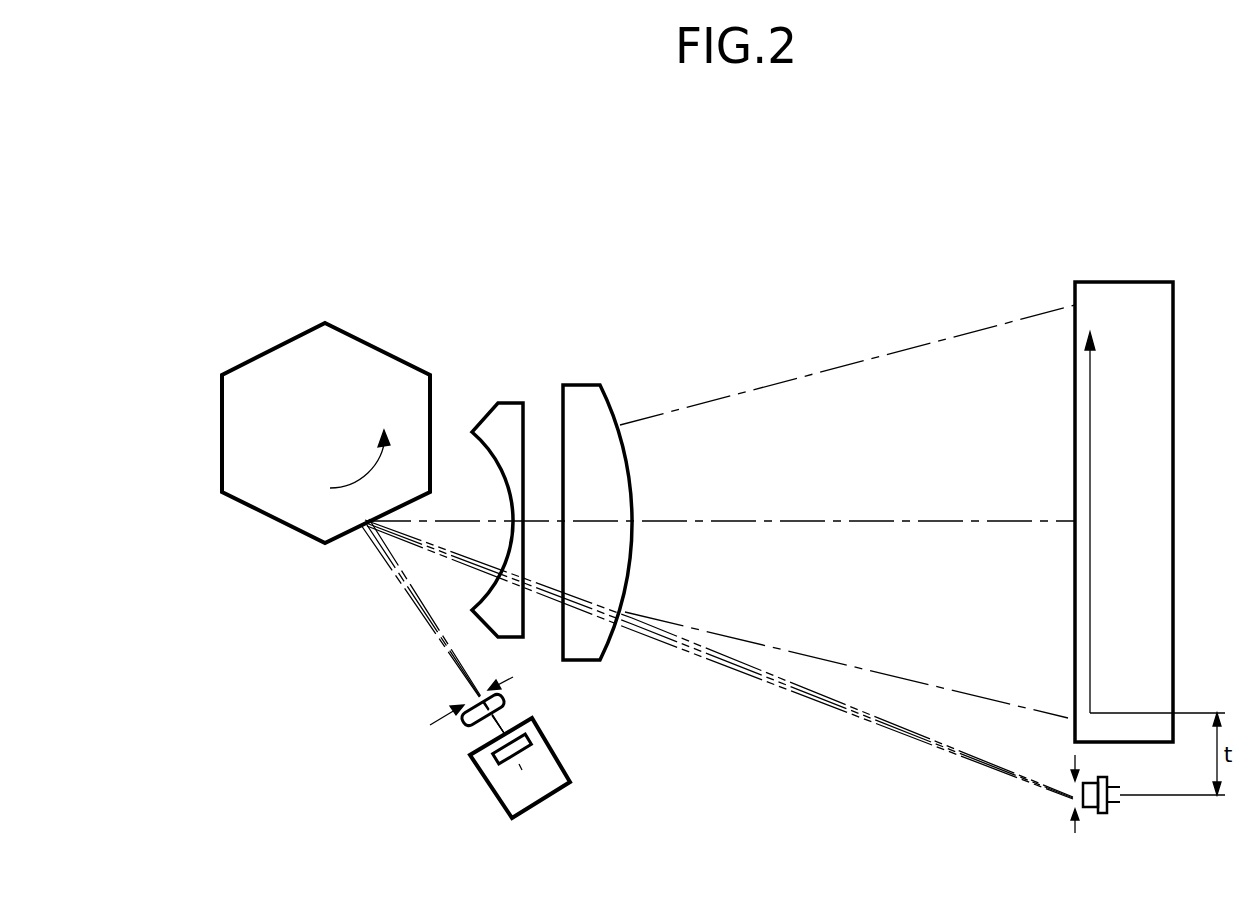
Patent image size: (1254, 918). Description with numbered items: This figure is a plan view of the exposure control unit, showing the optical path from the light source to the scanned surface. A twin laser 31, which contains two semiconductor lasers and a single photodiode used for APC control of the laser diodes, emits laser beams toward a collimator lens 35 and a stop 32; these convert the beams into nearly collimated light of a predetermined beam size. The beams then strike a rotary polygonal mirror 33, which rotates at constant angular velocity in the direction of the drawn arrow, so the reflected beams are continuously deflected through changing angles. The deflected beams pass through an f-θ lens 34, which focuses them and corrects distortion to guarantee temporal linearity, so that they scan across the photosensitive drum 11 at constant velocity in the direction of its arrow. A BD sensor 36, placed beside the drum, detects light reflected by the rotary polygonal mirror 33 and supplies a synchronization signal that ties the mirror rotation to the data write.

The photosensitive drum 11 is at (1126, 282).
The twin laser 31 is at (530, 740).
The stop 32 is at (505, 680).
The rotary polygonal mirror 33 is at (393, 357).
The f-θ lens 34 is at (613, 367).
The collimator lens 35 is at (468, 718).
The BD sensor 36 is at (1093, 813).